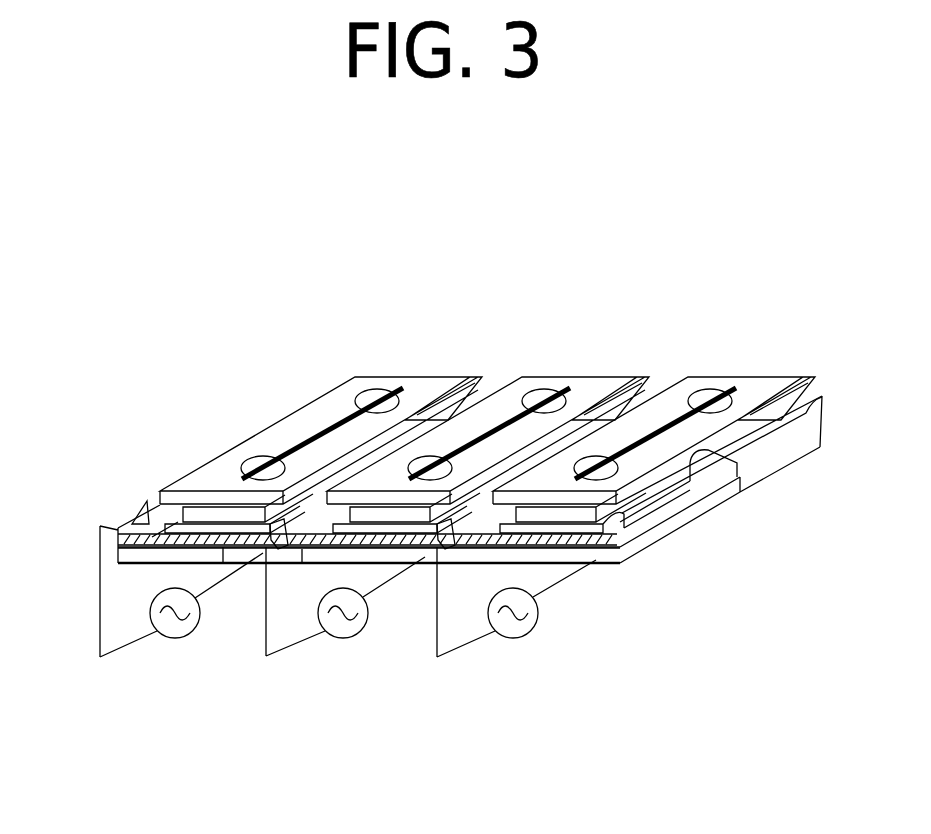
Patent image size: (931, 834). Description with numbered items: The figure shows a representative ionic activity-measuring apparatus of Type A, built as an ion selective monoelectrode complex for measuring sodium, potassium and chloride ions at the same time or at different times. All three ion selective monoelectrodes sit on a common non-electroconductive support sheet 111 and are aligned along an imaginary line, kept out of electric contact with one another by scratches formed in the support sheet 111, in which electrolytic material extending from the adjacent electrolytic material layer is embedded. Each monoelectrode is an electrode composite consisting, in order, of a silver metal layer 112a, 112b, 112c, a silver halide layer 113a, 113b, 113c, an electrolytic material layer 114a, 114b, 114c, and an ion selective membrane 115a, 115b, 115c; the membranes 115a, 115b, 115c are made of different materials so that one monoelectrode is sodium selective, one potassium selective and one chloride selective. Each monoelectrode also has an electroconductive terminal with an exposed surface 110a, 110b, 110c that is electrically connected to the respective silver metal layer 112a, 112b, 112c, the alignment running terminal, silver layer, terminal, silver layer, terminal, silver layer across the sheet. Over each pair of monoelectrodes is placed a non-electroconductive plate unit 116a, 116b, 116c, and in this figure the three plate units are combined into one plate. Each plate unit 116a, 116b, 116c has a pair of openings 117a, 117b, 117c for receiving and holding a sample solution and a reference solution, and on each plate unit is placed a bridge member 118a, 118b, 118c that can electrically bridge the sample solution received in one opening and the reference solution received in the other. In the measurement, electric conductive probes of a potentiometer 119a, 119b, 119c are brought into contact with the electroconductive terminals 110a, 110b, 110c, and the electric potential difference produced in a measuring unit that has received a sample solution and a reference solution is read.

The electroconductive terminal exposed surface 110a is at (133, 522).
The electroconductive terminal exposed surface 110b is at (268, 568).
The electroconductive terminal exposed surface 110c is at (450, 552).
The non-electroconductive support sheet 111 is at (656, 531).
The silver metal layer 112a is at (223, 565).
The silver metal layer 112b is at (401, 562).
The silver metal layer 112c is at (532, 565).
The silver halide layer 113a is at (224, 546).
The silver halide layer 113b is at (384, 556).
The silver halide layer 113c is at (566, 546).
The electrolytic material layer 114a is at (259, 548).
The electrolytic material layer 114b is at (460, 560).
The electrolytic material layer 114c is at (663, 503).
The ion selective membrane 115a is at (218, 506).
The ion selective membrane 115b is at (430, 530).
The ion selective membrane 115c is at (604, 525).
The non-electroconductive plate unit 116a is at (417, 380).
The non-electroconductive plate unit 116b is at (590, 380).
The non-electroconductive plate unit 116c is at (776, 383).
The openings 117a is at (373, 393).
The openings 117b is at (427, 458).
The openings 117c is at (598, 458).
The bridge member 118a is at (342, 428).
The bridge member 118b is at (479, 436).
The bridge member 118c is at (657, 430).
The potentiometer 119a is at (158, 641).
The potentiometer 119b is at (336, 640).
The potentiometer 119c is at (521, 638).